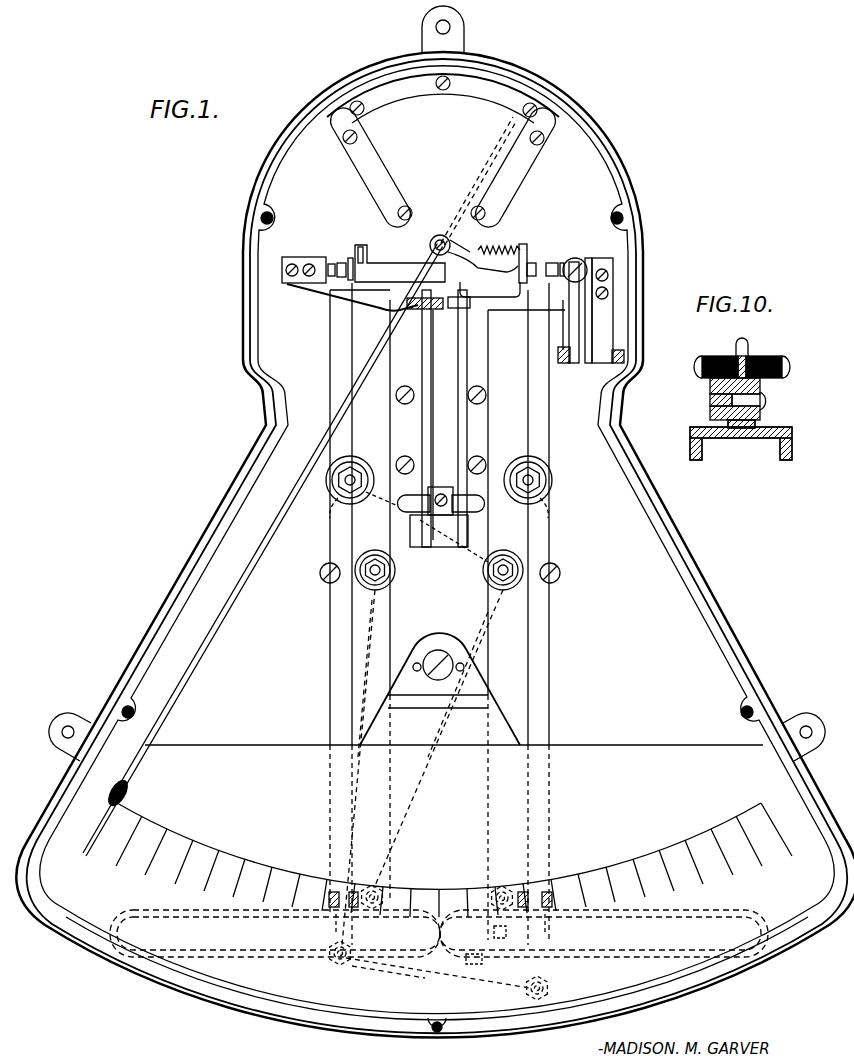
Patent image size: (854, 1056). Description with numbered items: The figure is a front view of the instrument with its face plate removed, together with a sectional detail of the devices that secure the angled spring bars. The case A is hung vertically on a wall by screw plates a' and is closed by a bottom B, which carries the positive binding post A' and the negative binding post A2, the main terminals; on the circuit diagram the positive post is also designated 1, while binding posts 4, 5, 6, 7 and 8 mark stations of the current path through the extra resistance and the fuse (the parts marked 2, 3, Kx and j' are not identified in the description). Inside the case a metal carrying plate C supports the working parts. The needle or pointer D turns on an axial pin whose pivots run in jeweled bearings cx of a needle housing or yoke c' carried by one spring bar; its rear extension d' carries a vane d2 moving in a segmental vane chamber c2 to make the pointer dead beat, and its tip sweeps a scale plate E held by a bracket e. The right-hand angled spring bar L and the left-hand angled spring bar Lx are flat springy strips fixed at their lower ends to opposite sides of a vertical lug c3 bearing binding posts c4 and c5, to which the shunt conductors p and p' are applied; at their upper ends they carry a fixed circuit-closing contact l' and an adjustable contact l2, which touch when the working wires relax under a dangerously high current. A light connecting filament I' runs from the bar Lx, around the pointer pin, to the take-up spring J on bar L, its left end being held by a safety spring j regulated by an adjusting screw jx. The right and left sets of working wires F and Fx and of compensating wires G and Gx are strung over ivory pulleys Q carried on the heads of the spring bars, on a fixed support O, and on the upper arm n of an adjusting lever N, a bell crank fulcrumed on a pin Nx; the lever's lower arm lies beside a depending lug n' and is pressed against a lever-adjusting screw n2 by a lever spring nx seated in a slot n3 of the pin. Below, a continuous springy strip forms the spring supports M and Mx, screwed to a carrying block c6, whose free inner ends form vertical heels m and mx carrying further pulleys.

In FIG. 1, the case A is at (435, 545).
In FIG. 1, the screw plates a' is at (437, 383).
In FIG. 1, the bottom B is at (437, 549).
In FIG. 1, the vane chamber c2 is at (443, 150).
In FIG. 1, the vane d2 is at (508, 155).
In FIG. 1, the jeweled bearings cx is at (437, 233).
In FIG. 1, the needle or pointer D is at (248, 612).
In FIG. 1, the needle housing or yoke c' is at (483, 256).
In FIG. 1, the rear extension of the pointer d' is at (506, 237).
In FIG. 1, the take-up spring J is at (528, 250).
In FIG. 1, the connecting filament I' is at (400, 263).
In FIG. 1, the safety spring j is at (345, 255).
In FIG. 1, the adjusting screw jx is at (358, 246).
In FIG. 1, the fixed support O is at (318, 284).
In FIG. 1, the ivory pulleys Q is at (333, 262).
In FIG. 1, the upper crank arm n is at (561, 256).
In FIG. 1, the slot n3 is at (563, 282).
In FIG. 1, the fulcrum pin Nx is at (600, 258).
In FIG. 1, the adjusting lever N is at (569, 325).
In FIG. 1, the fixed depending lug n' is at (625, 310).
In FIG. 1, the lever spring nx is at (566, 356).
In FIG. 1, the lever-adjusting screw n2 is at (624, 356).
In FIG. 1, the fixed circuit closing contact l' is at (449, 299).
In FIG. 1, the left-hand angled spring bar Lx is at (421, 375).
In FIG. 10, the left-hand angled spring bar Lx is at (710, 401).
In FIG. 1, the right-hand angled spring bar L is at (468, 380).
In FIG. 10, the right-hand angled spring bar L is at (760, 412).
In FIG. 1, the adjustable circuit closing contact l2 is at (434, 320).
In FIG. 1, the carrying plate C is at (388, 220).
In FIG. 10, the carrying plate C is at (752, 460).
In FIG. 1, the left hand set of working wires Fx is at (350, 374).
In FIG. 1, the left hand set of compensating wires Gx is at (317, 517).
In FIG. 1, the right hand set of working wires F is at (530, 413).
In FIG. 1, the right hand set of compensating wires G is at (550, 447).
In FIG. 1, the conductor p' is at (396, 430).
In FIG. 1, the conductor p is at (489, 430).
In FIG. 1, the positive binding post 1 is at (362, 462).
In FIG. 1, the nut 2 is at (518, 462).
In FIG. 1, the nut 3 is at (390, 572).
In FIG. 1, the binding post 4 is at (488, 572).
In FIG. 1, the positive binding post A' is at (348, 513).
In FIG. 1, the negative binding post A2 is at (562, 515).
In FIG. 1, the vertical lug or stud c3 is at (395, 506).
In FIG. 10, the vertical lug or stud c3 is at (734, 438).
In FIG. 1, the binding post c4 is at (484, 506).
In FIG. 10, the binding post c4 is at (784, 367).
In FIG. 1, the bracket e is at (492, 706).
In FIG. 1, the scale plate E is at (439, 850).
In FIG. 1, the vertical heel mx is at (327, 888).
In FIG. 1, the vertical heel m is at (552, 888).
In FIG. 1, the binding post 5 is at (384, 888).
In FIG. 1, the binding post 6 is at (490, 890).
In FIG. 1, the post 7 is at (342, 966).
In FIG. 1, the post 8 is at (548, 988).
In FIG. 1, the left spring support Mx is at (275, 933).
In FIG. 1, the right spring support M is at (604, 933).
In FIG. 1, the carrying block c6 is at (508, 934).
In FIG. 1, the bar Kx is at (438, 981).
In FIG. 1, the post j' is at (479, 956).
In FIG. 10, the binding post c5 is at (700, 368).